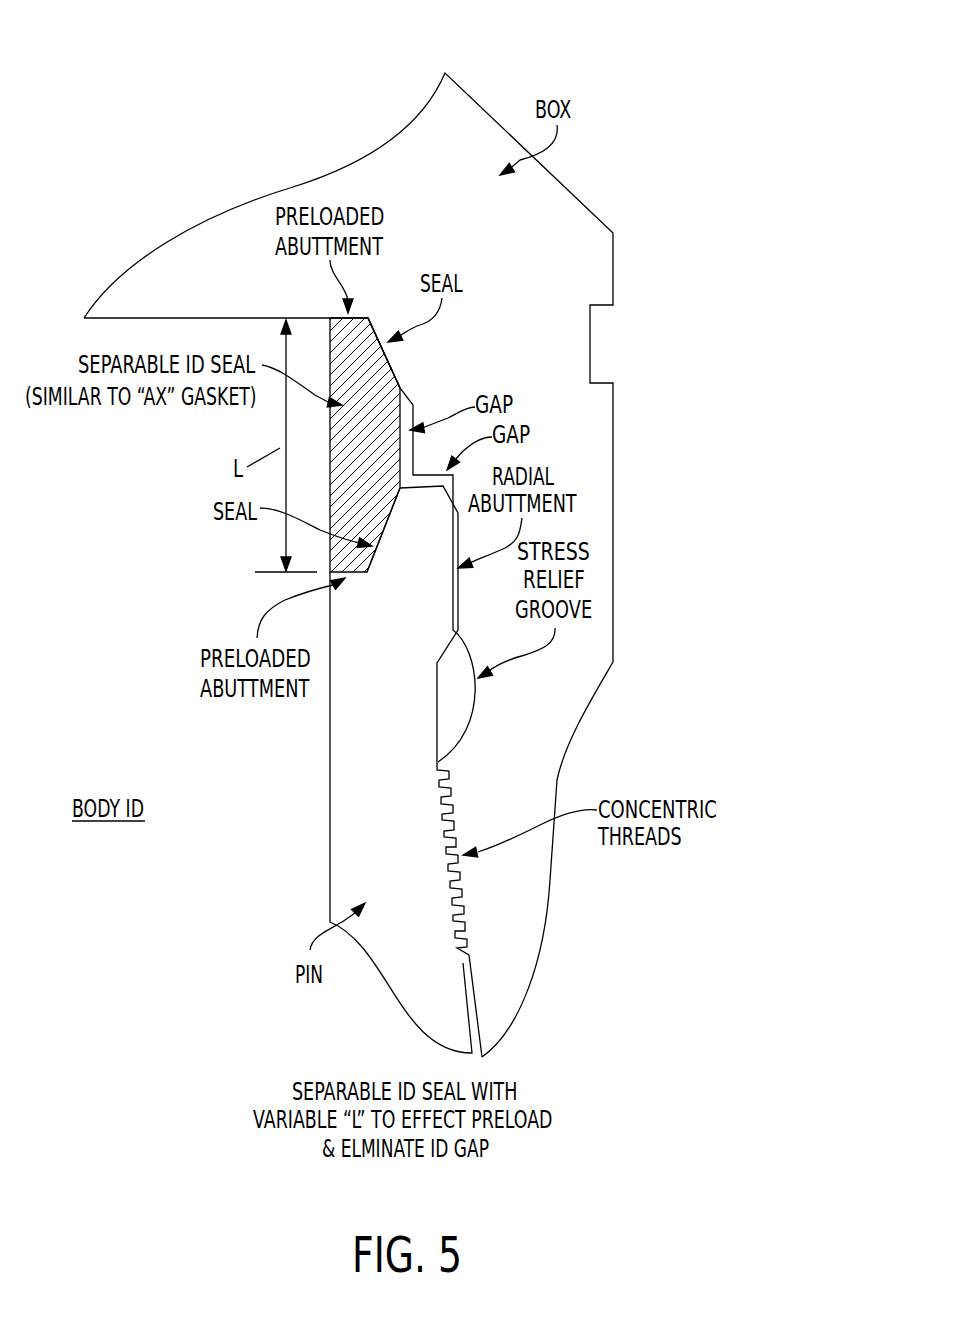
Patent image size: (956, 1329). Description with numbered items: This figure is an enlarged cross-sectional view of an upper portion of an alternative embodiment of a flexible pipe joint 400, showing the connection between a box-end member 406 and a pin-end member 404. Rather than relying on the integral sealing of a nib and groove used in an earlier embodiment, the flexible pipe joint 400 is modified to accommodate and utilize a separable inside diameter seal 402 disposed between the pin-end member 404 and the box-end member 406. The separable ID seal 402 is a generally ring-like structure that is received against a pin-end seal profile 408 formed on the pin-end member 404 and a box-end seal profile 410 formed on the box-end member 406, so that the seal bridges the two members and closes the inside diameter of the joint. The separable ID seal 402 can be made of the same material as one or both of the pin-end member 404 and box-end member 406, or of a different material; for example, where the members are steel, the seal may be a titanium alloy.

The flexible pipe joint 400 is at (385, 536).
The separable inside diameter (ID) seal 402 is at (342, 482).
The pin-end member 404 is at (433, 962).
The box-end member 406 is at (520, 218).
The pin-end seal profile 408 is at (383, 537).
The box-end seal profile 410 is at (405, 386).